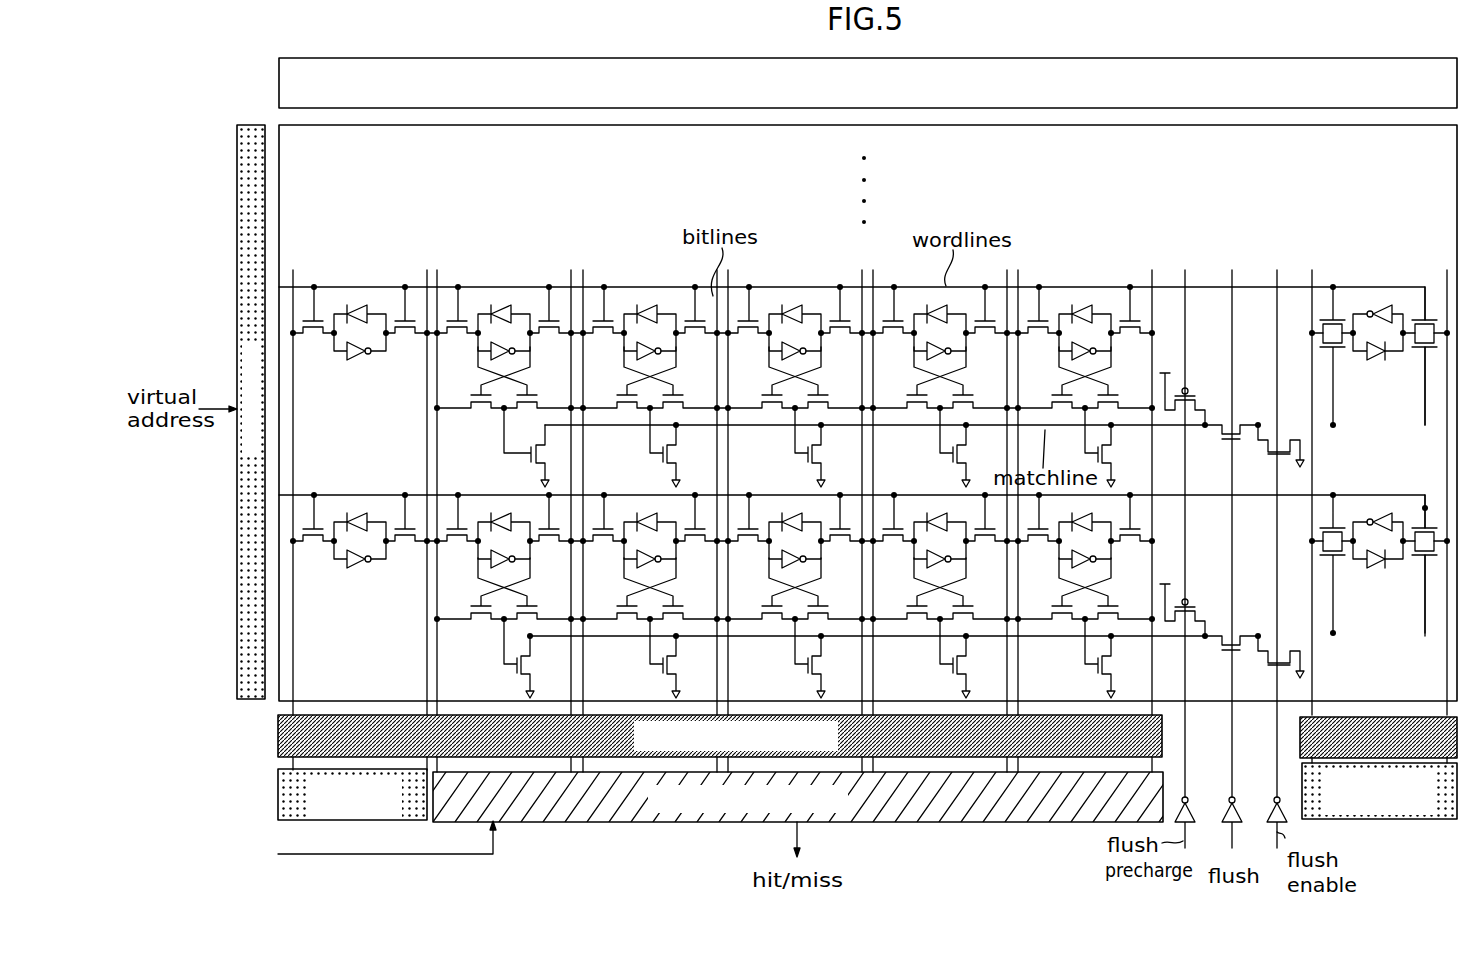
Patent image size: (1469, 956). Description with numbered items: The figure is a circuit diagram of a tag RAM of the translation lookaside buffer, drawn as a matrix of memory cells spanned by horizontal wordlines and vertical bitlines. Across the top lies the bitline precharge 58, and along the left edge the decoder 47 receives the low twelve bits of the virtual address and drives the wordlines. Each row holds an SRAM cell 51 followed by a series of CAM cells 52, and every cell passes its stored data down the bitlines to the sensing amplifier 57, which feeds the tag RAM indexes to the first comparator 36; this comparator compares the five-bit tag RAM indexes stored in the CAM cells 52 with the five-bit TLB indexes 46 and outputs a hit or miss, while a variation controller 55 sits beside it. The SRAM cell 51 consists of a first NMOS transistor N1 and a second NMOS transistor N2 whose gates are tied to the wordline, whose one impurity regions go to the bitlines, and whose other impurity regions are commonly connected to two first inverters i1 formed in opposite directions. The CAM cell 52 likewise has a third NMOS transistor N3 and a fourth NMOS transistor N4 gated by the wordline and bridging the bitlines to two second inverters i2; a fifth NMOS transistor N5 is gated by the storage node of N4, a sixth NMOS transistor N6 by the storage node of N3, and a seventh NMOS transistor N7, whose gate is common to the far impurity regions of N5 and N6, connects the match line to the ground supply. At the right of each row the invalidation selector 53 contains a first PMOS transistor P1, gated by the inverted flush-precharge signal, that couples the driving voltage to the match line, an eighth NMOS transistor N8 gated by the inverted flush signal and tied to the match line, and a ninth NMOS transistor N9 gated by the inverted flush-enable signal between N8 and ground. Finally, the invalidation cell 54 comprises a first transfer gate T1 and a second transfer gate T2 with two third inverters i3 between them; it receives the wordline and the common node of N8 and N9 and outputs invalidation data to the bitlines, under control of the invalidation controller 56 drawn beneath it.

The first comparator 36 is at (600, 823).
The TLB indexes 46 is at (226, 836).
The decoder 47 is at (247, 128).
The SRAM cell 51 is at (360, 402).
The CAM cell 52 is at (794, 462).
The invalidation selector 53 is at (1230, 517).
The invalidation cell 54 is at (1379, 500).
The variation controller 55 is at (280, 785).
The invalidation controller 56 is at (1394, 821).
The sensing amplifier 57 is at (285, 733).
The bitline precharge 58 is at (1013, 60).
The first NMOS transistor N1 is at (313, 323).
The second NMOS transistor N2 is at (406, 323).
The third NMOS transistor N3 is at (457, 323).
The fourth NMOS transistor N4 is at (550, 323).
The fifth NMOS transistor N5 is at (482, 392).
The sixth NMOS transistor N6 is at (526, 391).
The seventh NMOS transistor N7 is at (539, 447).
The eighth NMOS transistor N8 is at (1229, 447).
The ninth NMOS transistor N9 is at (1275, 455).
The first PMOS transistor P1 is at (1191, 400).
The first transfer gate T1 is at (1340, 351).
The second transfer gate T2 is at (1418, 351).
The first inverter i1 is at (357, 364).
The second inverter i2 is at (499, 293).
The third inverter i3 is at (1378, 362).